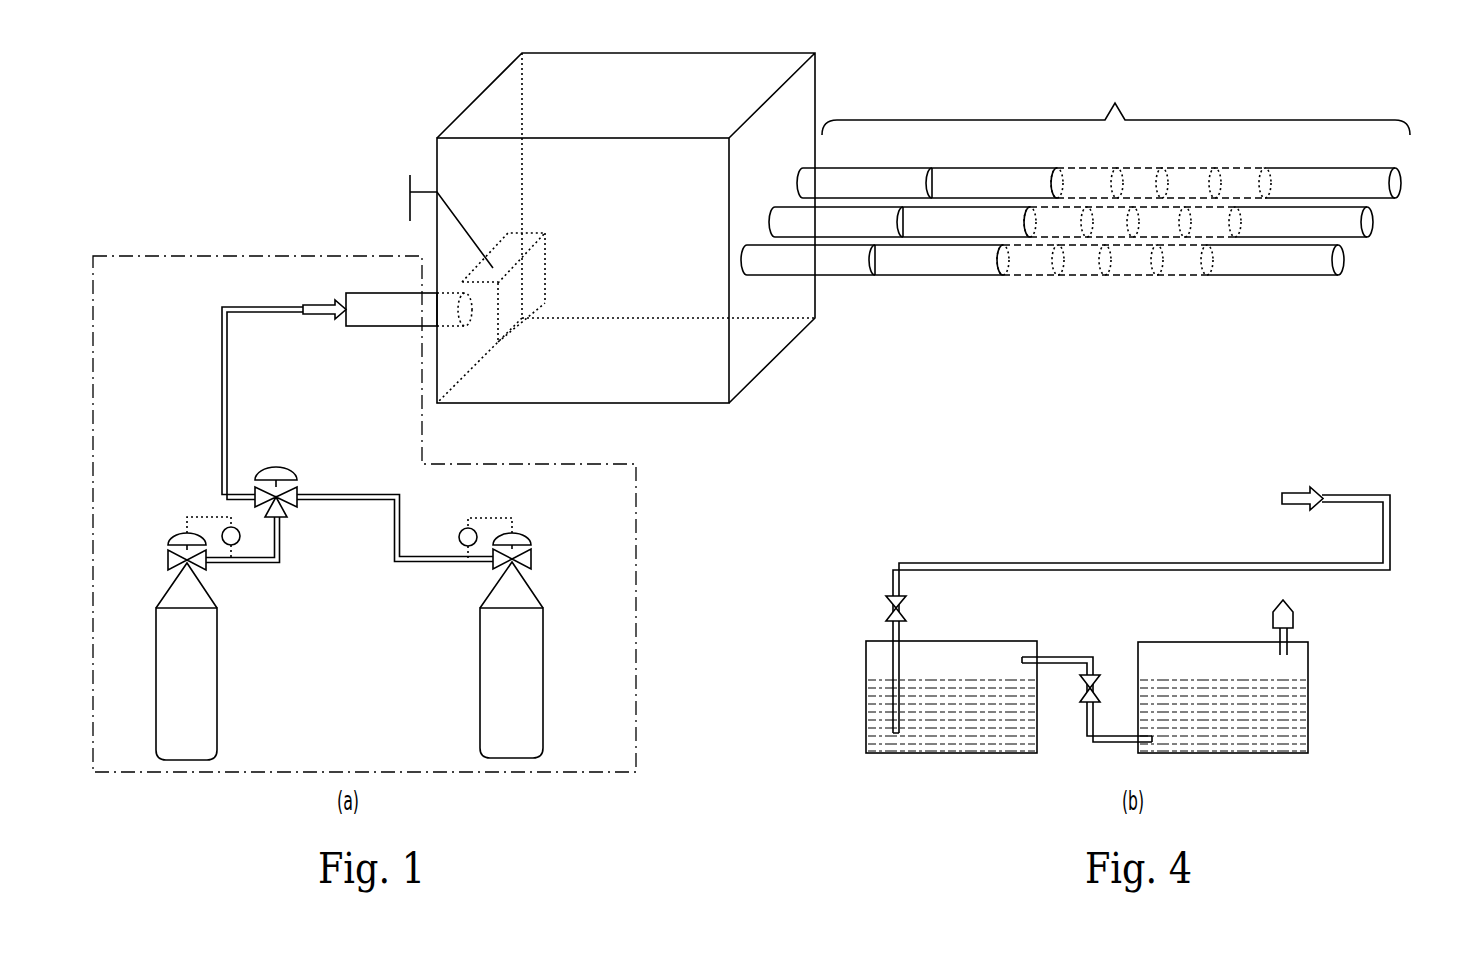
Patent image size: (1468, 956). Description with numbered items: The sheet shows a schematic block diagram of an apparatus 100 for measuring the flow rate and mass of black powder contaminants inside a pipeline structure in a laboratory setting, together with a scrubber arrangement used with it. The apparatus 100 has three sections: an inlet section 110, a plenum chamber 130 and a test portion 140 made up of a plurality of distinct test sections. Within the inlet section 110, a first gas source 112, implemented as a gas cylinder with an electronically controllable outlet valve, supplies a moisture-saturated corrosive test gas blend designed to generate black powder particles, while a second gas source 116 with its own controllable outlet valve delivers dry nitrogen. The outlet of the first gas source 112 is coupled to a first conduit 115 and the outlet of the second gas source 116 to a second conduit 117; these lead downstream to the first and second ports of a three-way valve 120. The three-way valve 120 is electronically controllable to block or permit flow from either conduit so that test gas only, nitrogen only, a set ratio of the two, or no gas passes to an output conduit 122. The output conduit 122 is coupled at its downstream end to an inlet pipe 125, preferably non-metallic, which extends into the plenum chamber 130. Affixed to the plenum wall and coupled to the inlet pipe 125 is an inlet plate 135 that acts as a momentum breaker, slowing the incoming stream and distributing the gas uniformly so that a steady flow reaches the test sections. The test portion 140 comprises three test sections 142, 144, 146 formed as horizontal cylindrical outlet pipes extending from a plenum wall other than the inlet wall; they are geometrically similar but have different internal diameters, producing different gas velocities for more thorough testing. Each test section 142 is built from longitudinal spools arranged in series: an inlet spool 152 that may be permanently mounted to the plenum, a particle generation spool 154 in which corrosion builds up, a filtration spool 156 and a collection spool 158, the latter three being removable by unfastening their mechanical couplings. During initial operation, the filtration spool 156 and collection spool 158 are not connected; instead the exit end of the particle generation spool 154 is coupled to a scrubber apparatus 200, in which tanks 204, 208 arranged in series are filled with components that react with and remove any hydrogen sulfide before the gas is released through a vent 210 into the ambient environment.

In FIG. 1, the apparatus 100 is at (238, 100).
In FIG. 1, the inlet section 110 is at (508, 772).
In FIG. 1, the first gas source 112 is at (217, 665).
In FIG. 1, the first conduit 115 is at (250, 563).
In FIG. 1, the second gas source 116 is at (478, 660).
In FIG. 1, the second conduit 117 is at (394, 528).
In FIG. 1, the 3-way valve 120 is at (273, 467).
In FIG. 1, the output conduit 122 is at (222, 368).
In FIG. 1, the inlet pipe 125 is at (392, 327).
In FIG. 1, the plenum chamber 130 is at (765, 370).
In FIG. 1, the inlet plate 135 is at (532, 268).
In FIG. 1, the test portion 140 is at (1100, 214).
In FIG. 1, the test section 142 is at (1080, 305).
In FIG. 1, the test section 144 is at (1372, 224).
In FIG. 1, the test section 146 is at (1400, 185).
In FIG. 1, the inlet spool 152 is at (820, 277).
In FIG. 1, the particle generation spool 154 is at (932, 277).
In FIG. 1, the filtration spool 156 is at (1076, 262).
In FIG. 1, the collection spool 158 is at (1218, 277).
In FIG. 1, the scrubber apparatus 200 is at (1100, 235).
In FIG. 4, the tank 204 is at (882, 724).
In FIG. 4, the tank 208 is at (1300, 723).
In FIG. 4, the vent 210 is at (1157, 642).